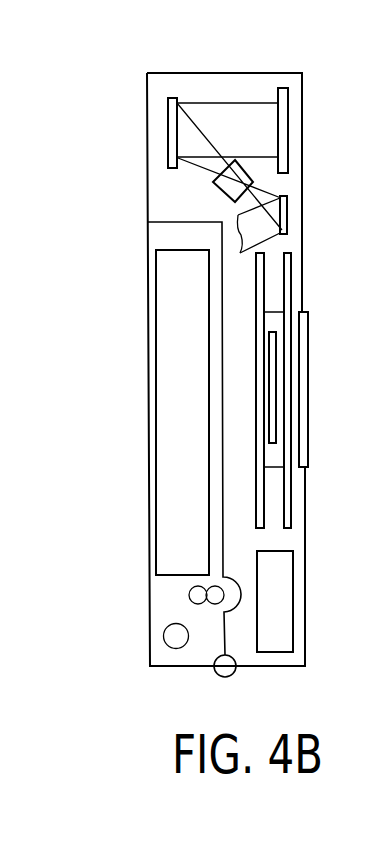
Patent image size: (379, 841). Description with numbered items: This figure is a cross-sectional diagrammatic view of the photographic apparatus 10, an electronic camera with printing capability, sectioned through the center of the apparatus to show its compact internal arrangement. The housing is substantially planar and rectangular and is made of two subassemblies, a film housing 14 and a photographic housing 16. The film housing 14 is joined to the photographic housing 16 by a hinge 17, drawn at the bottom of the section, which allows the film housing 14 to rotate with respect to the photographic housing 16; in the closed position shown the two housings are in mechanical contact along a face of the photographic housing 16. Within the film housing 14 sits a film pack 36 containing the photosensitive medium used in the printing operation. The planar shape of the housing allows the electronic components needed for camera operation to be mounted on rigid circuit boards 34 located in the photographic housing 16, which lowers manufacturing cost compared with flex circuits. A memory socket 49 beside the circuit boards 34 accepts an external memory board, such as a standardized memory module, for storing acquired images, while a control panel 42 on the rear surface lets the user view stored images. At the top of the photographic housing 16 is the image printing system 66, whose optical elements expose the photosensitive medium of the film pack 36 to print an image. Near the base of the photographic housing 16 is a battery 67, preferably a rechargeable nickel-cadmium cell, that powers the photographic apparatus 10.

The photographic apparatus 10 is at (226, 48).
The film housing 14 is at (158, 655).
The photographic housing 16 is at (297, 659).
The hinge 17 is at (230, 672).
The rigid circuit boards 34 is at (265, 508).
The film pack 36 is at (175, 478).
The control panel 42 is at (310, 337).
The memory socket 49 is at (278, 452).
The image printing system 66 is at (314, 83).
The battery 67 is at (288, 590).